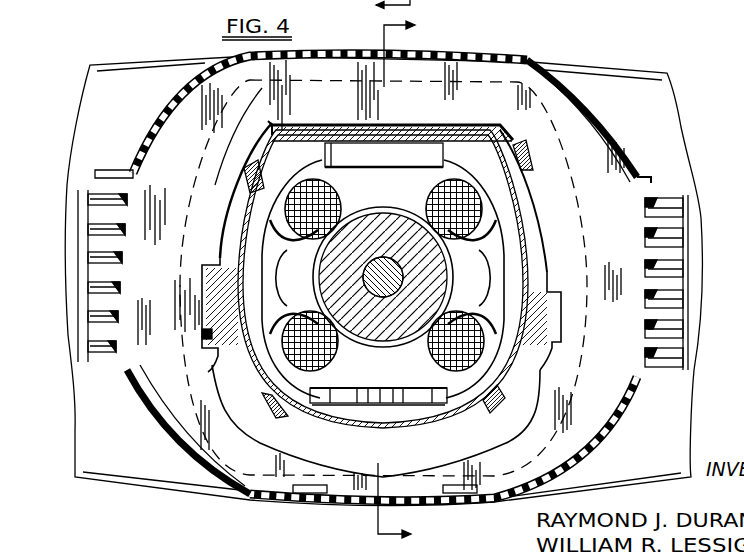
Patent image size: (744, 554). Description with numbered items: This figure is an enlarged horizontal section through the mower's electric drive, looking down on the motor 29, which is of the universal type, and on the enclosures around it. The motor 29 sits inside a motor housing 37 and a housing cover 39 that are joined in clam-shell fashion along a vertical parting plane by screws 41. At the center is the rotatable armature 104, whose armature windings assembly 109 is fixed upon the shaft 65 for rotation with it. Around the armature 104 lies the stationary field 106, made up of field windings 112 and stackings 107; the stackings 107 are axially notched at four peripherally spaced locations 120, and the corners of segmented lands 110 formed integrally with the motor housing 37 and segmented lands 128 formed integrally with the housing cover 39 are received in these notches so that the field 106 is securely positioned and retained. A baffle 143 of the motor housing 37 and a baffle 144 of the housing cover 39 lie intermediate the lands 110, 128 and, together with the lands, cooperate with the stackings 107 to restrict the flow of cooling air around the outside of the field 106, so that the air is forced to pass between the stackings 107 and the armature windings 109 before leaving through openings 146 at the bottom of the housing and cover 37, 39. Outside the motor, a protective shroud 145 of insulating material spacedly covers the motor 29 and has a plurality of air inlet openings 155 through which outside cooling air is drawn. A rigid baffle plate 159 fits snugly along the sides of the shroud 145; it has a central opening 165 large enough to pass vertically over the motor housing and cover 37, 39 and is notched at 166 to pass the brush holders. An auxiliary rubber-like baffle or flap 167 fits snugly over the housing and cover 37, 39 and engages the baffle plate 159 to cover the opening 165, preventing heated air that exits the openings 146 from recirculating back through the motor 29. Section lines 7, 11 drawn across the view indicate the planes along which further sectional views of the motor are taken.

The section line 7- 7 is at (385, 9).
The section line 11- 11 is at (406, 277).
The motor 29 is at (518, 187).
The motor housing 37 is at (437, 132).
The housing cover 39 is at (362, 406).
The screws 41 is at (238, 250).
The shaft 65 is at (380, 277).
The armature 104 is at (462, 300).
The field 106 is at (486, 190).
The stackings 107 is at (378, 178).
The armature windings assembly 109 is at (400, 181).
The segmented lands 110 is at (307, 167).
The field windings 112 is at (262, 202).
The peripherally spaced notched locations 120 is at (460, 168).
The segmented lands 128 is at (333, 404).
The baffle 143 is at (394, 100).
The baffle 144 is at (403, 408).
The protective shroud 145 is at (607, 93).
The openings 146 is at (384, 404).
The air inlet openings 155 is at (88, 352).
The baffle plate 159 is at (500, 97).
The central opening 165 is at (270, 126).
The notch 166 is at (216, 404).
The auxiliary baffle 167 is at (215, 295).